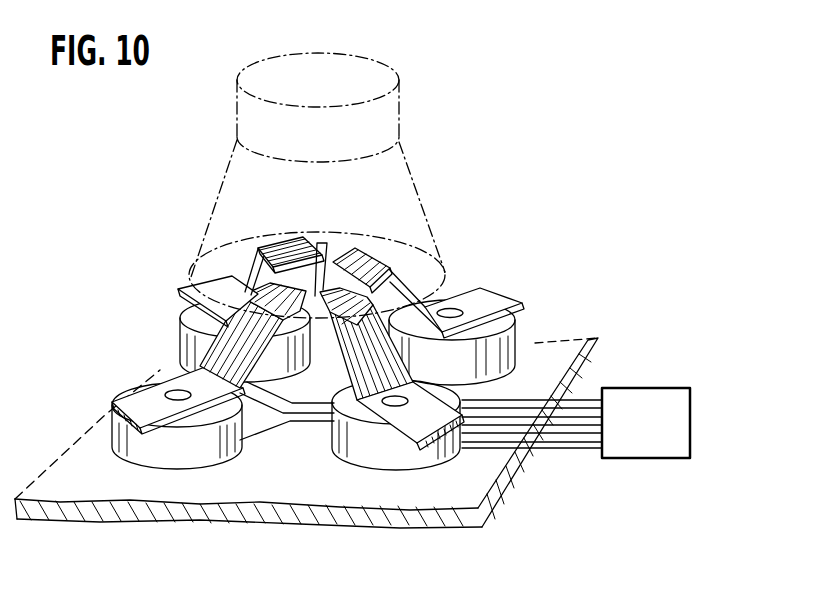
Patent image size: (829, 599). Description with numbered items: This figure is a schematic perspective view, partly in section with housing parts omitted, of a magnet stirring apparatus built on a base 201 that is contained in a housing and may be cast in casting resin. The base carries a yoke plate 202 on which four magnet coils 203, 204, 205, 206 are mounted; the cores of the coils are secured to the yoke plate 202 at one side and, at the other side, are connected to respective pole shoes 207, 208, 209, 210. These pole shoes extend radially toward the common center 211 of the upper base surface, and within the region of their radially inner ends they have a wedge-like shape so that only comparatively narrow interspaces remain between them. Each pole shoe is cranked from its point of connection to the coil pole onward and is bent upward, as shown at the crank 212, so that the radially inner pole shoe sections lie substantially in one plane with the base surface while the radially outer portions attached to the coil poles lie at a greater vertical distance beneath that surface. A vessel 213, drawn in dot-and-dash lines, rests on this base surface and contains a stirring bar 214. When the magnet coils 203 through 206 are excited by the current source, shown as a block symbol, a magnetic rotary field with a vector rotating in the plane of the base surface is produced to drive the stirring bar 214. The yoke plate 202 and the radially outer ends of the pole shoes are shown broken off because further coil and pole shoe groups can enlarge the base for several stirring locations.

The base 201 is at (560, 319).
The yoke plate 202 is at (548, 360).
The magnet coil 203 is at (173, 456).
The magnet coil 204 is at (402, 460).
The magnet coil 205 is at (520, 332).
The magnet coil 206 is at (178, 314).
The pole shoe 207 is at (143, 400).
The pole shoe 208 is at (425, 415).
The pole shoe 209 is at (488, 302).
The pole shoe 210 is at (218, 293).
The center 211 is at (333, 245).
The upward crank 212 is at (227, 356).
The vessel 213 is at (400, 170).
The stirring bar 214 is at (365, 233).